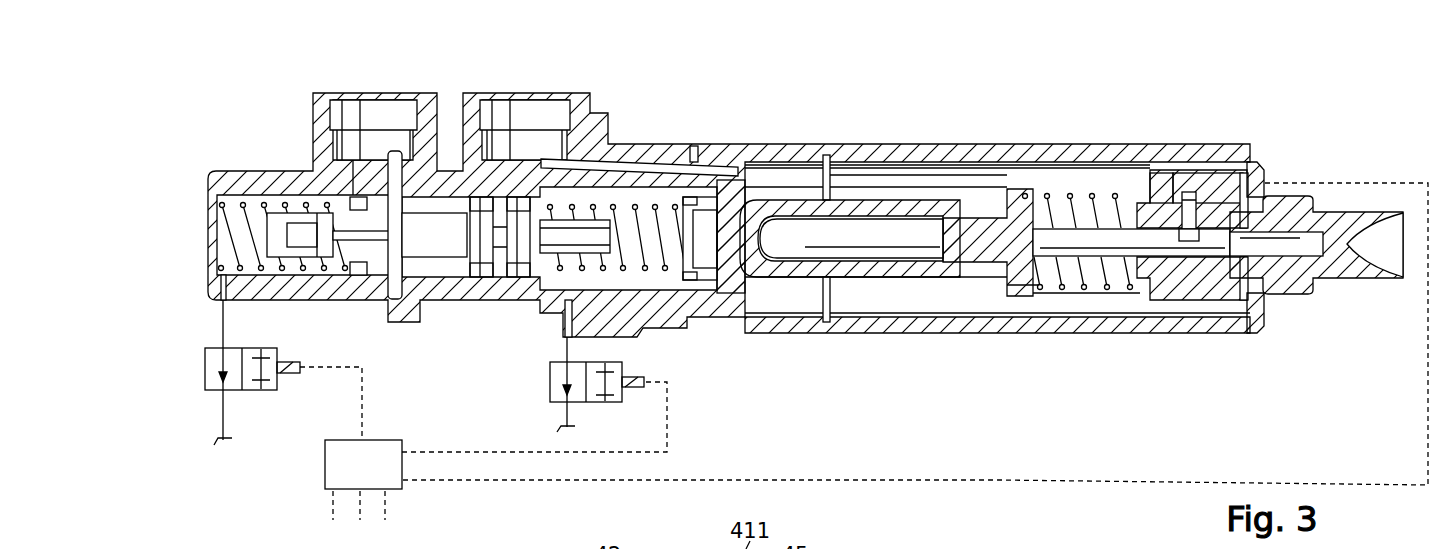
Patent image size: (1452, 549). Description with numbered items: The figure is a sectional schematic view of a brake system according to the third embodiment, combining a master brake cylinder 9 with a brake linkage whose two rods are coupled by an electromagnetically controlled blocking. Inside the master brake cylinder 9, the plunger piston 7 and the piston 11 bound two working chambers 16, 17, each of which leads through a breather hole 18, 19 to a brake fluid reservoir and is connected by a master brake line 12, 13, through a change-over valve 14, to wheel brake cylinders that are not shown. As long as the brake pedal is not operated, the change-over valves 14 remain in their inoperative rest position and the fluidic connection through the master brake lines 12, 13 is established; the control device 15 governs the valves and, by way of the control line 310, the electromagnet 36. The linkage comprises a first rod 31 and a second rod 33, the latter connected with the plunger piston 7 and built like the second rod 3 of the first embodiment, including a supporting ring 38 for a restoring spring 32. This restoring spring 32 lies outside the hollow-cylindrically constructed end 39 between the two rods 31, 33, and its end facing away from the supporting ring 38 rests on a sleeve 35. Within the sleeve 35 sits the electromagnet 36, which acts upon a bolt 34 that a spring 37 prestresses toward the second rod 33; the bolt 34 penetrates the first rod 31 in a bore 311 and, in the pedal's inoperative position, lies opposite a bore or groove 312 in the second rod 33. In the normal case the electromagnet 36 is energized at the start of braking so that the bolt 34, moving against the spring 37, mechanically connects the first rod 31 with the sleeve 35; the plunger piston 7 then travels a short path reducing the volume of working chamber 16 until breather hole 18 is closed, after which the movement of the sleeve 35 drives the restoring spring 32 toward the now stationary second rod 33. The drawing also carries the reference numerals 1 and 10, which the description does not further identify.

The nozzle 1 is at (1292, 212).
The second rod 3 is at (883, 246).
The plunger piston 7 is at (745, 192).
The master brake cylinder 9 is at (580, 82).
The inclined pin 10 is at (643, 158).
The piston 11 is at (421, 234).
The master brake line 12 is at (222, 313).
The master brake line 13 is at (565, 345).
The change-over valve 14 is at (200, 370).
The control device 15 is at (352, 479).
The working chamber 16 is at (635, 262).
The working chamber 17 is at (243, 207).
The breather hole 18 is at (707, 233).
The breather hole 19 is at (350, 190).
The first rod 31 is at (1260, 272).
The restoring spring 32 is at (1048, 273).
The second rod 33 is at (1117, 242).
The bolt 34 is at (1193, 235).
The sleeve 35 is at (1182, 208).
The electromagnet 36 is at (1232, 210).
The spring 37 is at (1200, 228).
The supporting ring 38 is at (1017, 189).
The hollow-cylindrically constructed end 39 is at (1280, 252).
The control line 310 is at (840, 480).
The bore 311 is at (1167, 200).
The bore or groove 312 is at (1177, 235).